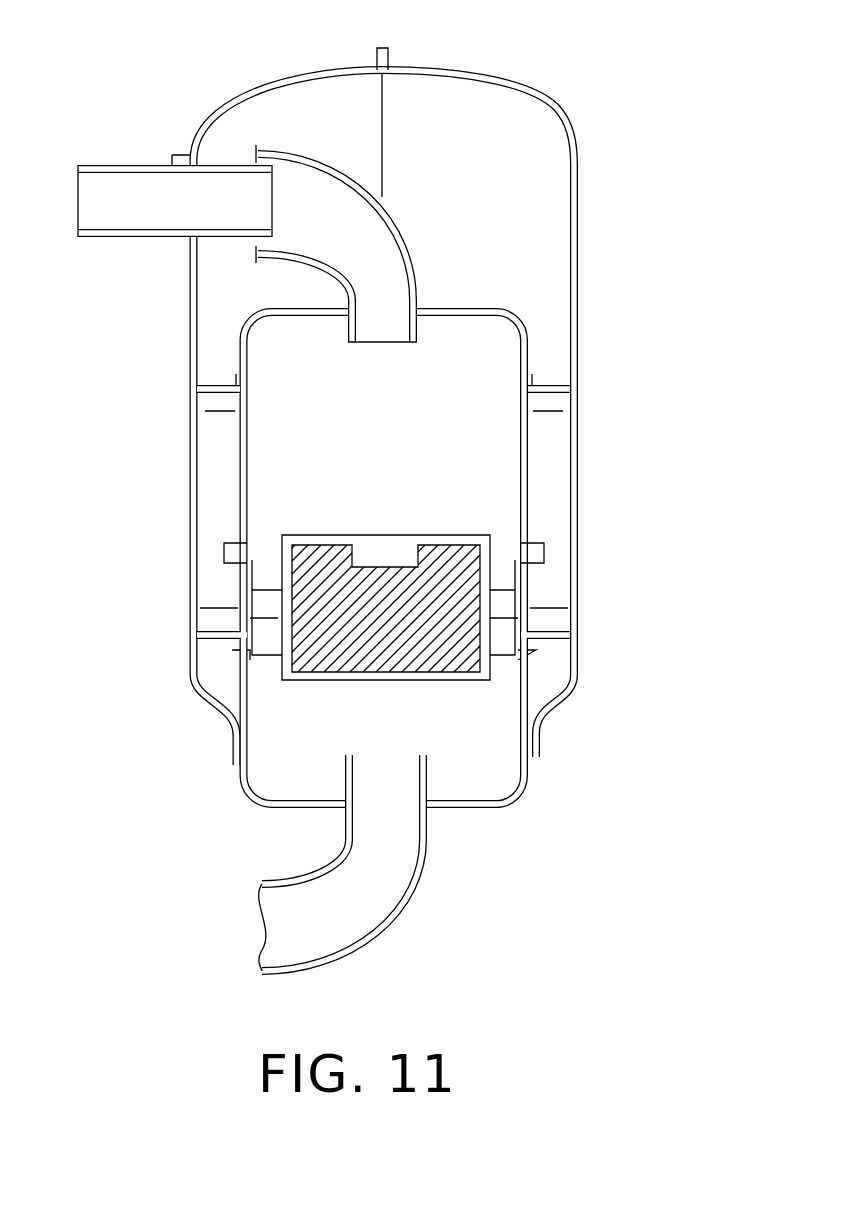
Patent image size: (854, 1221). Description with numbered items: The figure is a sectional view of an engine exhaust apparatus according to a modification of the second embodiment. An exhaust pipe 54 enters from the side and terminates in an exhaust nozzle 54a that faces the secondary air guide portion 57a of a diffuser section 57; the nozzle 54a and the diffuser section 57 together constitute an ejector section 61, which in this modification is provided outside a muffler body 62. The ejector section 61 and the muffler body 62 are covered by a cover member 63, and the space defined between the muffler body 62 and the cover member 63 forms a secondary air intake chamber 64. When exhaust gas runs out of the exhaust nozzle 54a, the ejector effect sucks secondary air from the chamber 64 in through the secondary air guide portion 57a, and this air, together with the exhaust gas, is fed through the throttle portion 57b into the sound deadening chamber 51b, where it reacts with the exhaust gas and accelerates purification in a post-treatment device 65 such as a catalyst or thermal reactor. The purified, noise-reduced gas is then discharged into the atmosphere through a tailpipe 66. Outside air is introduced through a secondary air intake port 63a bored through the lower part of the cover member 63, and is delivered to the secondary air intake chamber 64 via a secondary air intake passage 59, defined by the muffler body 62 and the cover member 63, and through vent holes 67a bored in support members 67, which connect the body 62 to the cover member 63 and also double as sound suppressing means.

The sound deadening chamber 51b is at (500, 450).
The exhaust pipe 54 is at (118, 168).
The exhaust nozzle 54a is at (268, 205).
The diffuser section 57 is at (410, 246).
The secondary air guide portion 57a is at (302, 188).
The throttle portion 57b is at (378, 345).
The secondary air intake passage 59 is at (556, 499).
The ejector section 61 is at (262, 158).
The muffler body 62 is at (470, 306).
The cover member 63 is at (580, 282).
The secondary air intake port 63a is at (190, 650).
The secondary air intake chamber 64 is at (478, 92).
The post-treatment device 65 is at (312, 682).
The tailpipe 66 is at (418, 893).
The support member 67 is at (550, 385).
The vent hole 67a is at (207, 380).